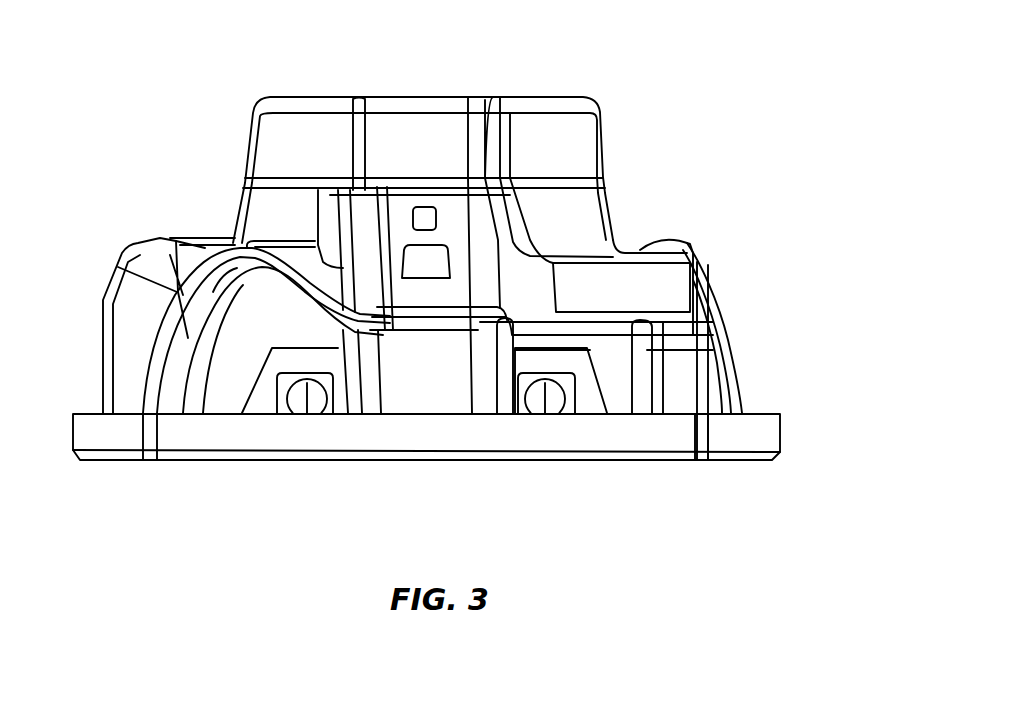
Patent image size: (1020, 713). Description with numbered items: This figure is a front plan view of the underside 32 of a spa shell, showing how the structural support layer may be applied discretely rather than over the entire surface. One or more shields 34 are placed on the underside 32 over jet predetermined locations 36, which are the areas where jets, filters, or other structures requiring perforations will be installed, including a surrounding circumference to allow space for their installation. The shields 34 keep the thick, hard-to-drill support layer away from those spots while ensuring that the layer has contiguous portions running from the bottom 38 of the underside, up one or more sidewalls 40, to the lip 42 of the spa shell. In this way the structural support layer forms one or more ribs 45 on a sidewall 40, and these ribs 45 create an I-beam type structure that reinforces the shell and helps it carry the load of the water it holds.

The underside 32 is at (248, 64).
The shield 34 is at (263, 401).
The jet predetermined location 36 is at (390, 260).
The bottom 38 is at (568, 107).
The sidewall 40 is at (588, 226).
The lip 42 is at (762, 433).
The rib 45 is at (215, 387).